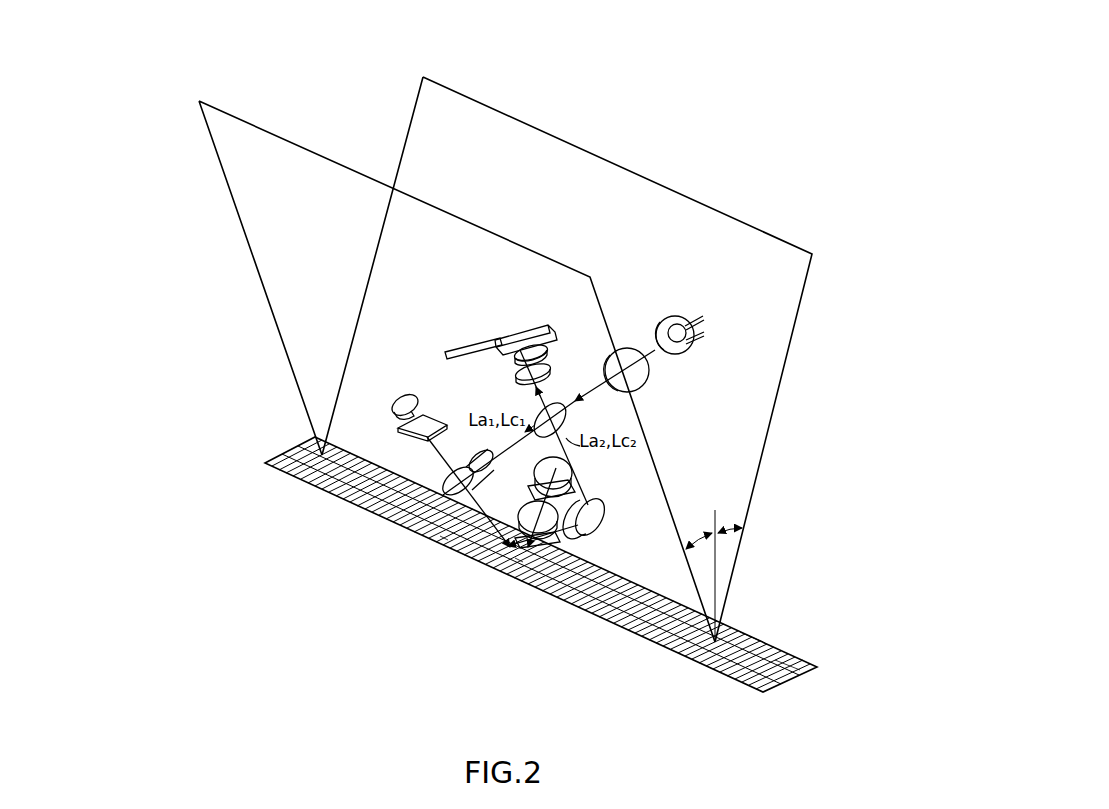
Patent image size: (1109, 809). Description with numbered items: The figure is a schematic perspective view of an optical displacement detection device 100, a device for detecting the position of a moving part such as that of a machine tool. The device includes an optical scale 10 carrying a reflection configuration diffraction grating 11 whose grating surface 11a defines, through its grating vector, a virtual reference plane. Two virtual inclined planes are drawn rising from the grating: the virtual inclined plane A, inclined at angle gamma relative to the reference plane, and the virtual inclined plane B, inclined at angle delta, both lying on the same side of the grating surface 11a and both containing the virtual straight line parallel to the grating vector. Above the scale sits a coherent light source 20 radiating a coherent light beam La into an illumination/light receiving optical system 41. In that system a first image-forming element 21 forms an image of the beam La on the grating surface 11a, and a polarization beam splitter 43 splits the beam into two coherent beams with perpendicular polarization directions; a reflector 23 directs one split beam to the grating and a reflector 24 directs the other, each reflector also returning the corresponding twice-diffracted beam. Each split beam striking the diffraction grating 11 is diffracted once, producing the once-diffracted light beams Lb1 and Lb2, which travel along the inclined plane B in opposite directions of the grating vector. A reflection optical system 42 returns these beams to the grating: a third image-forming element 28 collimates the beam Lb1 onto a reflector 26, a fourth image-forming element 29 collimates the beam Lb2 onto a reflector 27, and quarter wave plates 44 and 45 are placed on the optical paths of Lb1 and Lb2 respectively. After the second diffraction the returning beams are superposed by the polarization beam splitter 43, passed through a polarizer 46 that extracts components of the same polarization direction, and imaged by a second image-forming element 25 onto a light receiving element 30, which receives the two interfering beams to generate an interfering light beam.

The optical displacement detection device 100 is at (623, 116).
The optical scale 10 is at (651, 656).
The diffraction grating 11 is at (756, 640).
The grating surface 11a is at (788, 666).
The coherent light source 20 is at (670, 318).
The first image-forming element 21 is at (650, 385).
The reflector 23 is at (472, 458).
The reflector 24 is at (607, 516).
The second image-forming element 25 is at (515, 375).
The reflector 26 is at (400, 397).
The reflector 27 is at (572, 470).
The third image-forming element 28 is at (444, 540).
The fourth image-forming element 29 is at (519, 560).
The light receiving element 30 is at (524, 334).
The illumination/light receiving optical system 41 is at (531, 418).
The reflection optical system 42 is at (426, 392).
The polarization beam splitter 43 is at (556, 405).
The quarter wave plate 44 is at (398, 428).
The quarter wave plate 45 is at (578, 490).
The polarizer 46 is at (547, 352).
The virtual inclined plane A is at (468, 96).
The virtual inclined plane B is at (237, 117).
The coherent light beam La is at (648, 356).
The once-diffracted light beam Lb1 is at (432, 452).
The once-diffracted light beam Lb2 is at (537, 498).